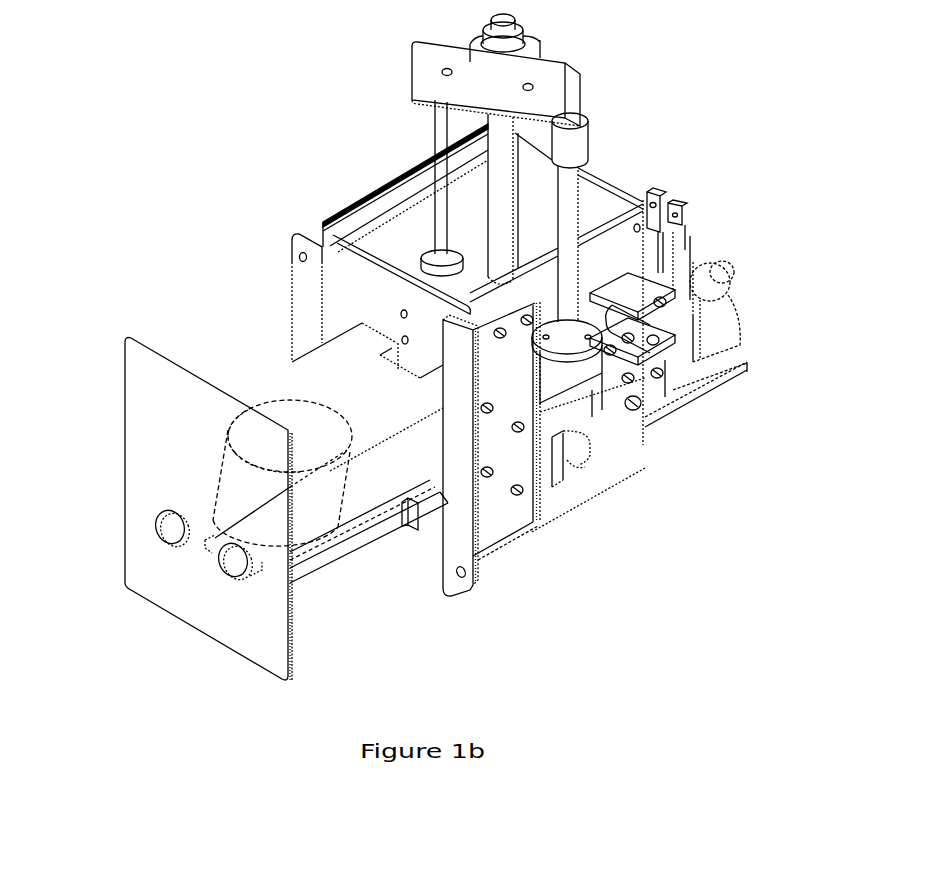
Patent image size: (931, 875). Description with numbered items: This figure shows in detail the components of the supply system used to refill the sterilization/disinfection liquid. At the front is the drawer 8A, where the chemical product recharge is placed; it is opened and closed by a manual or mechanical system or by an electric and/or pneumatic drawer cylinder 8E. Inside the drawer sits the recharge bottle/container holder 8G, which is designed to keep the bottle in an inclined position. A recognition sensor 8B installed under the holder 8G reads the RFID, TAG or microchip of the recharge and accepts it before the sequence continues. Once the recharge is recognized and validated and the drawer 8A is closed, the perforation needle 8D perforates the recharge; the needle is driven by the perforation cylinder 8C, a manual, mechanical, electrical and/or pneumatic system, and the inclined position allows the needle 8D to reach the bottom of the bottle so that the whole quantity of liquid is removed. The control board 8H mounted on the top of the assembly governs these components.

The drawer 8A is at (155, 473).
The recognition sensor 8B is at (340, 525).
The perforation cylinder 8C is at (553, 487).
The perforation needle 8D is at (432, 150).
The drawer cylinder 8E is at (710, 327).
The recharge bottle/container holder 8G is at (283, 367).
The control board 8H is at (334, 215).